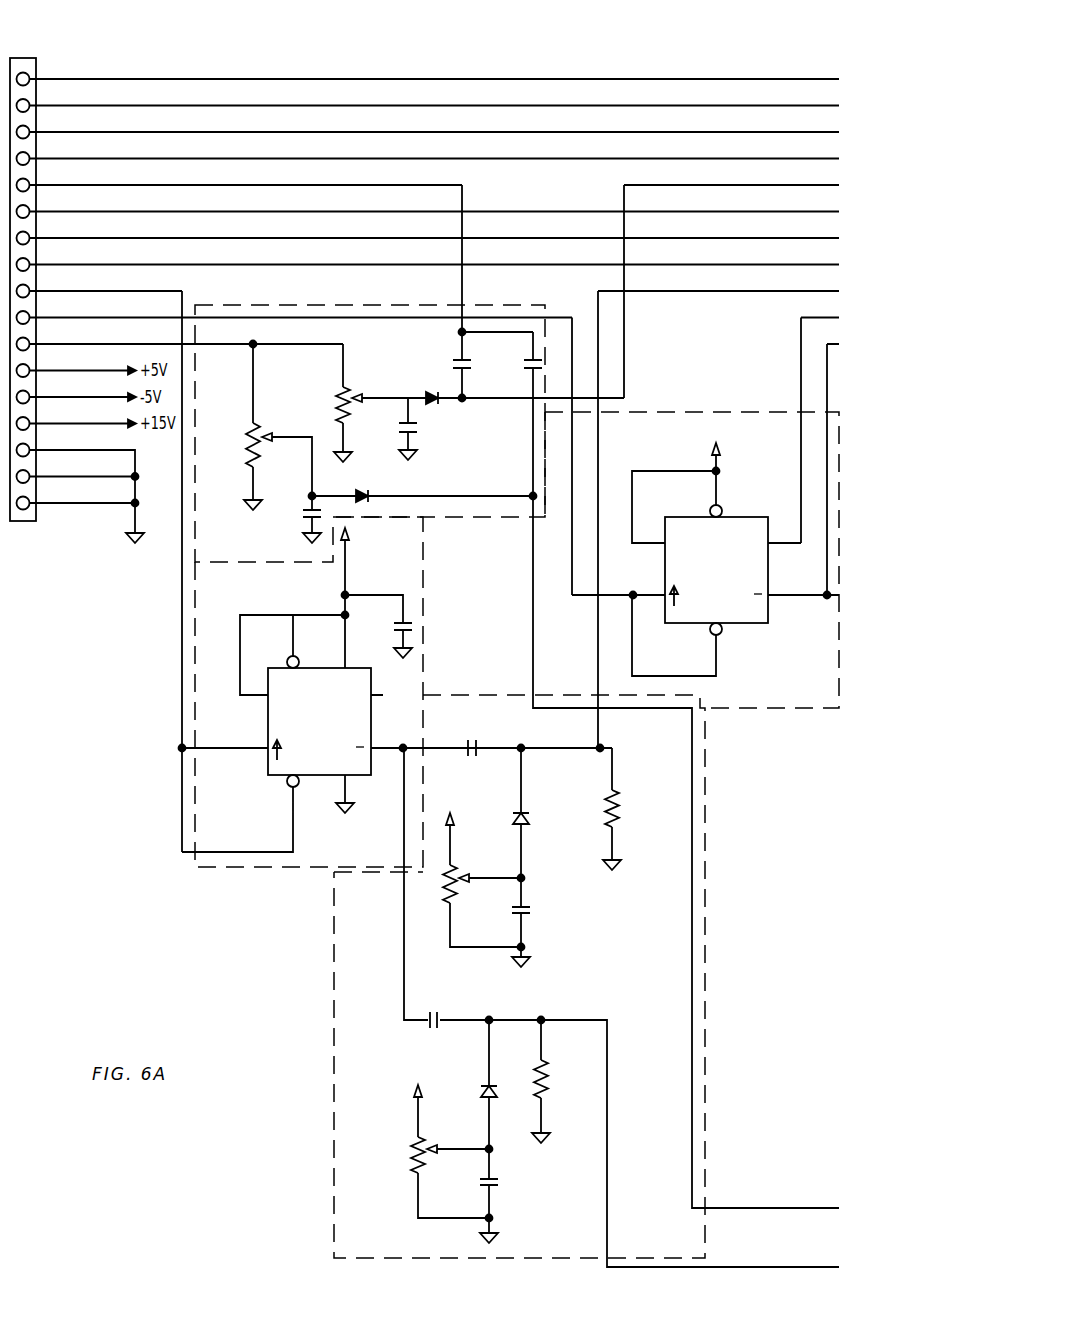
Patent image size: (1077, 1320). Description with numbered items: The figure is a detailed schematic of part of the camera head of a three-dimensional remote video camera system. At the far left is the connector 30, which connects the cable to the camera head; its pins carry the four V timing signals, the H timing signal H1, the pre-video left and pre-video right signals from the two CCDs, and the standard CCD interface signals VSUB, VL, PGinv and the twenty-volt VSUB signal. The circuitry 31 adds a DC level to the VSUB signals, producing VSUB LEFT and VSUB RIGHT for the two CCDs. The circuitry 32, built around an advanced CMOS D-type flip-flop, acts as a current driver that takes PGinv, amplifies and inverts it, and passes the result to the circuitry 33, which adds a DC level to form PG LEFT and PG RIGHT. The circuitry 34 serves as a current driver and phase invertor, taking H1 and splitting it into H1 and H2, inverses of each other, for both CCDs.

The connector 30 is at (22, 57).
The DC level adding circuitry 31 is at (205, 306).
The current driver circuitry 32 is at (192, 702).
The DC level adding circuitry 33 is at (330, 1170).
The current driver and phase invertor circuitry 34 is at (770, 712).